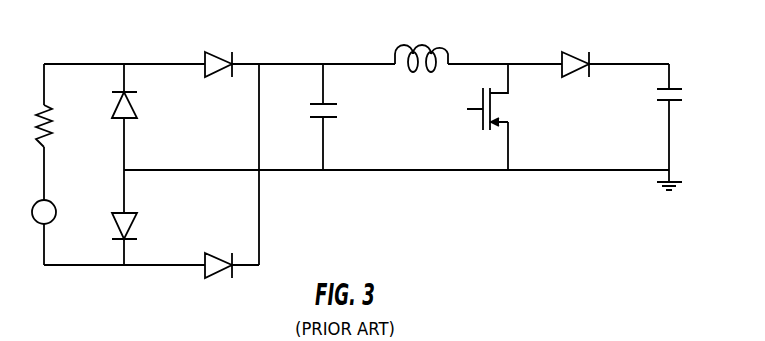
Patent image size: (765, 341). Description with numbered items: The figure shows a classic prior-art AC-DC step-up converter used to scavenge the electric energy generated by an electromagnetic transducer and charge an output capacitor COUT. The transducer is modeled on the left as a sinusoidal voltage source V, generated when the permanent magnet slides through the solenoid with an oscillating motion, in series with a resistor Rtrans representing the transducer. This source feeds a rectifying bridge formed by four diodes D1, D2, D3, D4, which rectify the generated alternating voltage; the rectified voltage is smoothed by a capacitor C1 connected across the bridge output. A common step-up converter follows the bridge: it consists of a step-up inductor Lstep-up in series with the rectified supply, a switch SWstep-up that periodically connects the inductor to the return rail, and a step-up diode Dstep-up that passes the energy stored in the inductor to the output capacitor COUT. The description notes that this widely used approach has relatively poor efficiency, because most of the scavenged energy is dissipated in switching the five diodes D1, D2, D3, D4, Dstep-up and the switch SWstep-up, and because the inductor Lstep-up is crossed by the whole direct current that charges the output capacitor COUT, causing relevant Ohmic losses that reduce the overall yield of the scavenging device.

The transducer resistor Rtrans is at (73, 127).
The sinusoidal voltage V is at (54, 211).
The rectifier diode D1 is at (216, 83).
The rectifier diode D2 is at (216, 282).
The rectifier diode D3 is at (140, 110).
The rectifier diode D4 is at (140, 225).
The input capacitor C1 is at (338, 115).
The step-up inductor Lstep-up is at (423, 42).
The step-up switch transistor SWstep-up is at (532, 117).
The step-up diode Dstep-up is at (588, 45).
The output capacitor COUT is at (691, 98).